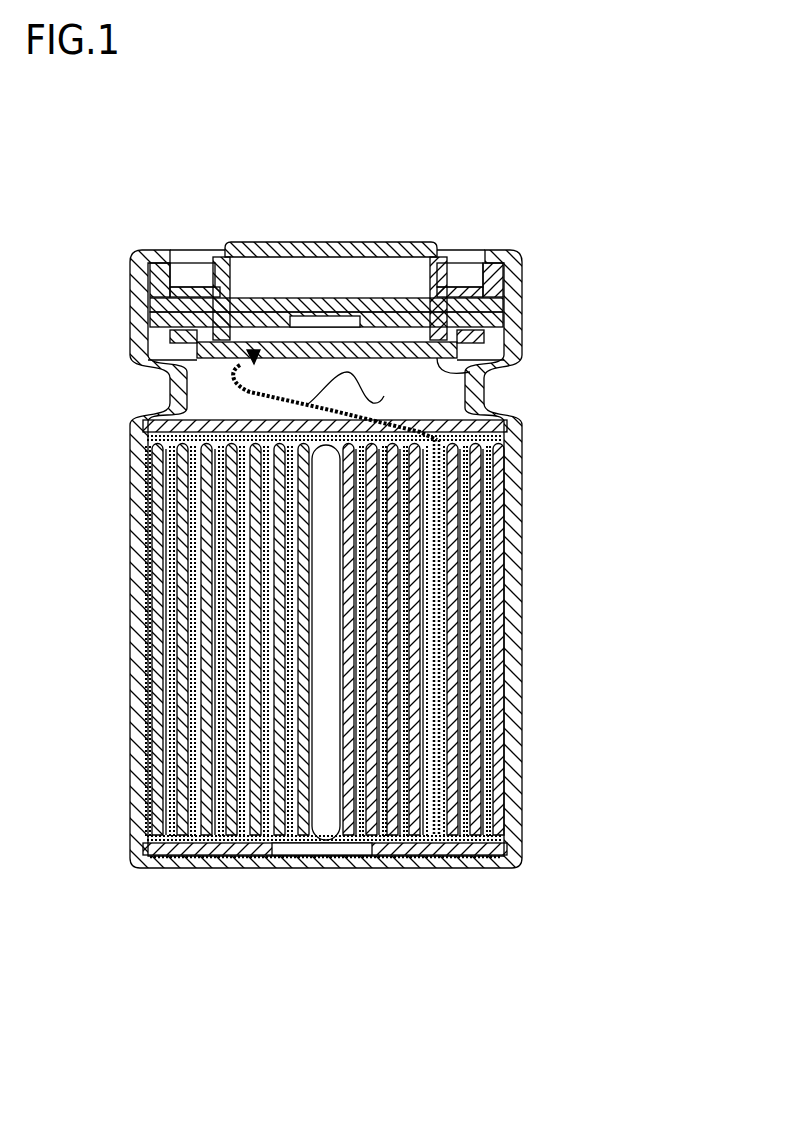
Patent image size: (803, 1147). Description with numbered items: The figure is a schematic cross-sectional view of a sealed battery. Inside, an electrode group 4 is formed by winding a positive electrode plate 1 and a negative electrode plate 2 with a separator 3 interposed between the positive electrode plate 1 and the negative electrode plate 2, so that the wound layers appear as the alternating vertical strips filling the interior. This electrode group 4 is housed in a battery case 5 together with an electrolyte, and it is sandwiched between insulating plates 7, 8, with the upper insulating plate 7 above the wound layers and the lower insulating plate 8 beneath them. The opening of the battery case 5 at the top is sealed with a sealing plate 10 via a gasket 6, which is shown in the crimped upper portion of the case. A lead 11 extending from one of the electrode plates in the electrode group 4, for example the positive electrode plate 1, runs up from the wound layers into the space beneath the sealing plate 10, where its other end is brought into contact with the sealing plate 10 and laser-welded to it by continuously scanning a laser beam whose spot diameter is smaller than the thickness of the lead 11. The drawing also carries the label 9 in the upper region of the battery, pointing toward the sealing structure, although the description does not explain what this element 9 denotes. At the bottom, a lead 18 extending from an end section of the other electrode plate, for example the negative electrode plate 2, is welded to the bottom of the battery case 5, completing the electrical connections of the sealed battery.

The positive electrode plate 1 is at (497, 628).
The negative electrode plate 2 is at (583, 592).
The separator 3 is at (515, 596).
The electrode group 4 is at (391, 638).
The battery case 5 is at (122, 570).
The gasket 6 is at (504, 278).
The insulating plate 7 is at (130, 422).
The insulating plate 8 is at (265, 862).
The positive electrode lead 9 is at (253, 355).
The sealing plate 10 is at (495, 363).
The lead 11 is at (386, 393).
The lead 18 is at (407, 862).